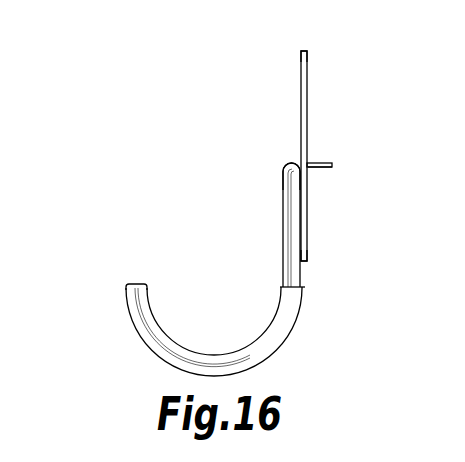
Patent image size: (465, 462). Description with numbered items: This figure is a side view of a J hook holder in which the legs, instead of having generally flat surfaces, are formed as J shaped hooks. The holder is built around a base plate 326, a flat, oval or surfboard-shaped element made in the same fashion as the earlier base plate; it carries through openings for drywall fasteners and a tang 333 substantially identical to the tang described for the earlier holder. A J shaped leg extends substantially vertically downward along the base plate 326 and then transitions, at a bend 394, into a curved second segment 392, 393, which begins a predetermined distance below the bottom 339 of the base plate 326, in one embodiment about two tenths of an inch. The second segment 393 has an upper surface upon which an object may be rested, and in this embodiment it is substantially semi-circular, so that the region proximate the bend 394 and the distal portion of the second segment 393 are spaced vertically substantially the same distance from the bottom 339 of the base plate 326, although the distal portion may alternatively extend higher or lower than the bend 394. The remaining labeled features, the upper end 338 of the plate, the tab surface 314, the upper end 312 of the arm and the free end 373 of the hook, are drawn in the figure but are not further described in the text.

The base plate 326 is at (303, 92).
The upper end of retaining strip 338 is at (304, 50).
The bottom of base plate 339 is at (306, 261).
The tang 333 is at (320, 163).
The tab lower surface 314 is at (333, 167).
The upper end of hook arm 312 is at (308, 169).
The second segment 392 is at (283, 270).
The bend 394 is at (300, 306).
The second segment 393 is at (213, 353).
The free end of hook 373 is at (128, 298).